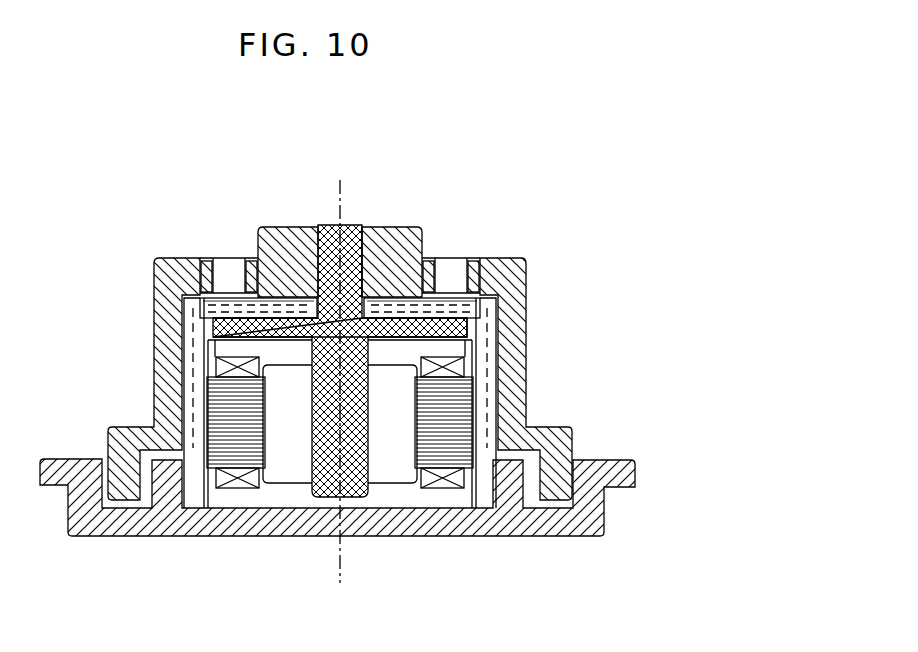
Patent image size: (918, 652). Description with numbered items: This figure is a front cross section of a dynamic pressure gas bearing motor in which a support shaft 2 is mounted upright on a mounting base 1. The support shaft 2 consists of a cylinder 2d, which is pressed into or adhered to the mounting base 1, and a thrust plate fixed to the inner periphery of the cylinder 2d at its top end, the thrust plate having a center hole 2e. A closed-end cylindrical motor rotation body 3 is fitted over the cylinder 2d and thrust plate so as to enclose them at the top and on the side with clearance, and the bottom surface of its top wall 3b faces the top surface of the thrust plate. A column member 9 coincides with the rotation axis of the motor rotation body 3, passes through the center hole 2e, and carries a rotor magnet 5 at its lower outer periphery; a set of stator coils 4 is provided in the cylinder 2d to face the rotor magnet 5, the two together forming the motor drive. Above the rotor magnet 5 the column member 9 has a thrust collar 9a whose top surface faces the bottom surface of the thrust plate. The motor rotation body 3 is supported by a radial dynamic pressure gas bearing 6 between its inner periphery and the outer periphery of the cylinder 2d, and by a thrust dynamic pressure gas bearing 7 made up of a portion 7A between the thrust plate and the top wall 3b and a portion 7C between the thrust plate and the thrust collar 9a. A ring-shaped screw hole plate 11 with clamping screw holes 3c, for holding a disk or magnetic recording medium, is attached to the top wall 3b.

The mounting base 1 is at (614, 477).
The support shaft 2 is at (443, 320).
The cylinder 2d is at (478, 405).
The center hole 2e is at (366, 295).
The motor rotation body 3 is at (144, 257).
The top wall 3b is at (198, 257).
The clamping screw holes 3c is at (229, 272).
The stator coils 4 is at (234, 458).
The rotor magnet 5 is at (395, 469).
The radial dynamic pressure gas bearing 6 is at (500, 345).
The thrust dynamic pressure gas bearing 7 is at (354, 224).
The thrust dynamic pressure gas bearing 7A is at (388, 303).
The thrust dynamic pressure gas bearing 7C is at (238, 312).
The column member 9 is at (320, 491).
The thrust collar 9a is at (213, 331).
The screw hole plate 11 is at (477, 259).